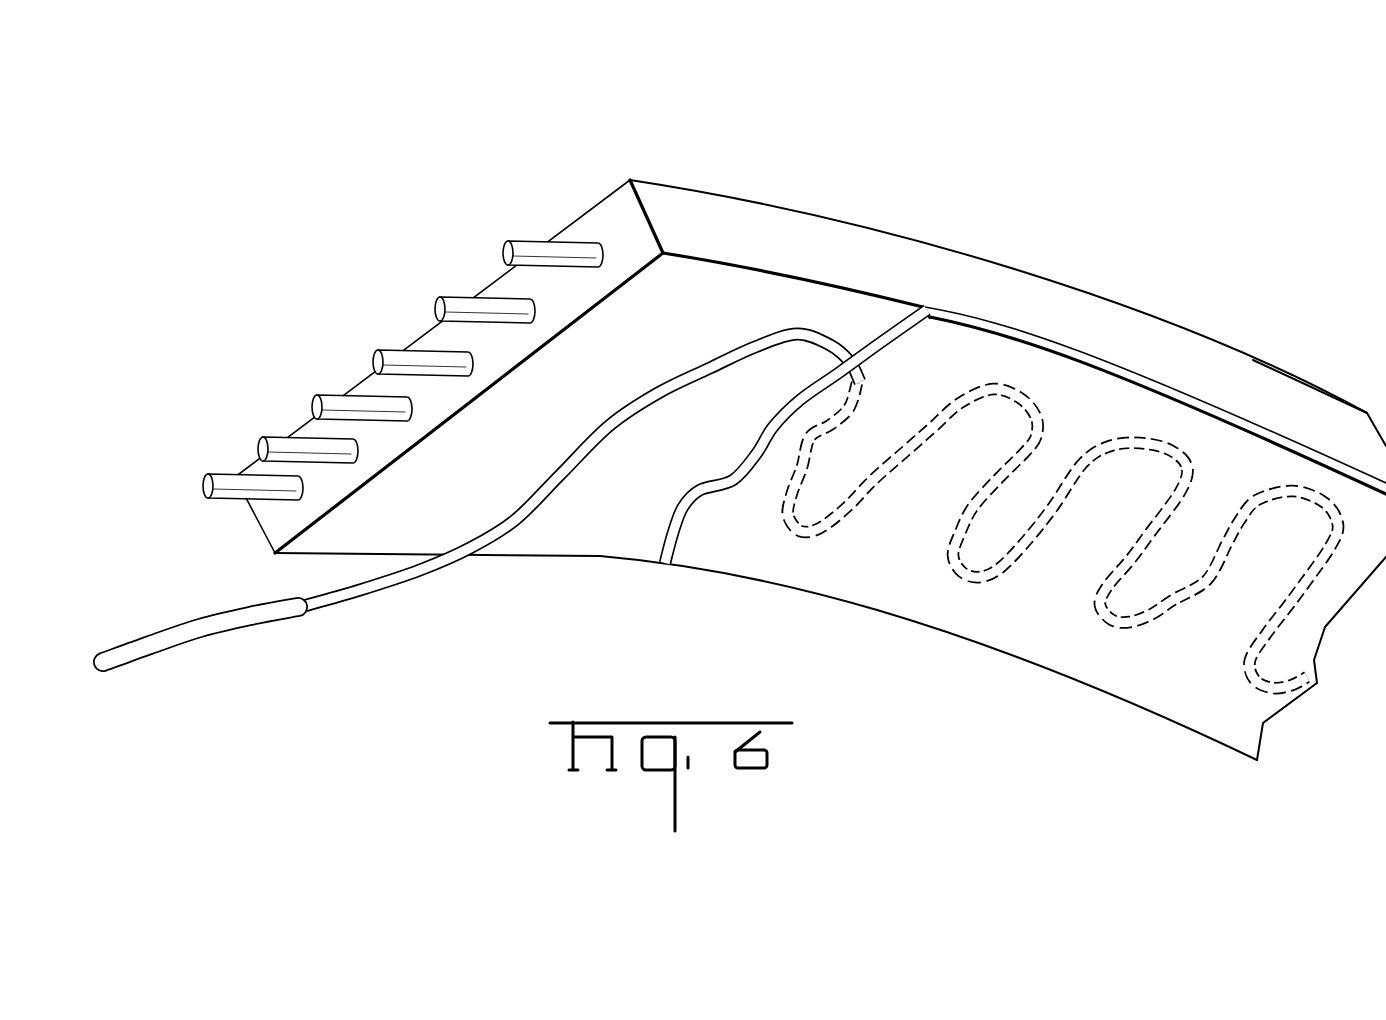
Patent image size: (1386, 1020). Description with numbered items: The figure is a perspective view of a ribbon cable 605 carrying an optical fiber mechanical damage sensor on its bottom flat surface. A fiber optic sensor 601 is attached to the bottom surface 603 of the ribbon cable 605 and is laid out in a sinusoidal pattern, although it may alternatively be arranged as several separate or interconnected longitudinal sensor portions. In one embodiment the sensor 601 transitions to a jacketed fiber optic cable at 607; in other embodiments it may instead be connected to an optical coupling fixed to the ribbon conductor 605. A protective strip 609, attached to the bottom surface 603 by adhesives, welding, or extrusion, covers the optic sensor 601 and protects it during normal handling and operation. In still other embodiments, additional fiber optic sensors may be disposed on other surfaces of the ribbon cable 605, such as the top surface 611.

The fiber optic sensor 601 is at (535, 473).
The bottom surface 603 is at (715, 288).
The ribbon cable 605 is at (1098, 286).
The transition to jacketed fiber optic cable 607 is at (300, 618).
The protective strip 609 is at (882, 337).
The top surface 611 is at (682, 180).